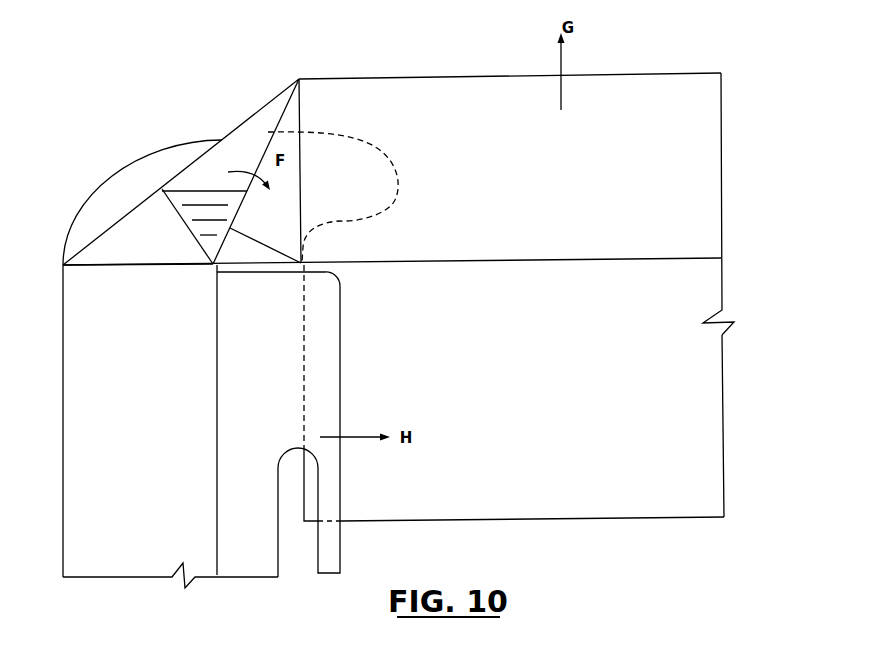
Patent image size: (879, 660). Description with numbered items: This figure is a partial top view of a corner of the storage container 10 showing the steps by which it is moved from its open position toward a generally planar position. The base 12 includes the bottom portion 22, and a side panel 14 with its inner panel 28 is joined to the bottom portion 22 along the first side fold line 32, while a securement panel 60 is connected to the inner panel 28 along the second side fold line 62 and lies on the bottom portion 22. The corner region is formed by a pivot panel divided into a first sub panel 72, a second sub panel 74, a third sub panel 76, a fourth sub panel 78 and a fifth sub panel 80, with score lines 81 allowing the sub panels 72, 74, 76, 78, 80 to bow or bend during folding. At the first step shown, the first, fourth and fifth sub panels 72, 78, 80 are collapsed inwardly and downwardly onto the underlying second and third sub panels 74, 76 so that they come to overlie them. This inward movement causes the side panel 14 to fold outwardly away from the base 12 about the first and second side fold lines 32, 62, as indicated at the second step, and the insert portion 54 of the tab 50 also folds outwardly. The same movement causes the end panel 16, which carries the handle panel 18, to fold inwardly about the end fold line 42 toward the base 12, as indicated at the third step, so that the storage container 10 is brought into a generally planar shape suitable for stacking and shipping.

The storage container 10 is at (751, 101).
The base 12 is at (701, 373).
The side panels 14 is at (654, 70).
The end panels 16 is at (170, 426).
The handle panels 18 is at (250, 567).
The bottom portion 22 is at (521, 532).
The inner panel 28 is at (647, 176).
The first side fold line 32 is at (438, 241).
The end fold lines 42 is at (63, 430).
The tabs 50 is at (157, 147).
The insert portion 54 is at (336, 165).
The securement panels 60 is at (647, 396).
The second side fold lines 62 is at (690, 258).
The first sub panel 72 is at (181, 172).
The second sub panel 74 is at (256, 171).
The third sub panel 76 is at (263, 171).
The fourth sub panel 78 is at (138, 247).
The fifth sub panel 80 is at (178, 195).
The score lines 81 is at (202, 205).